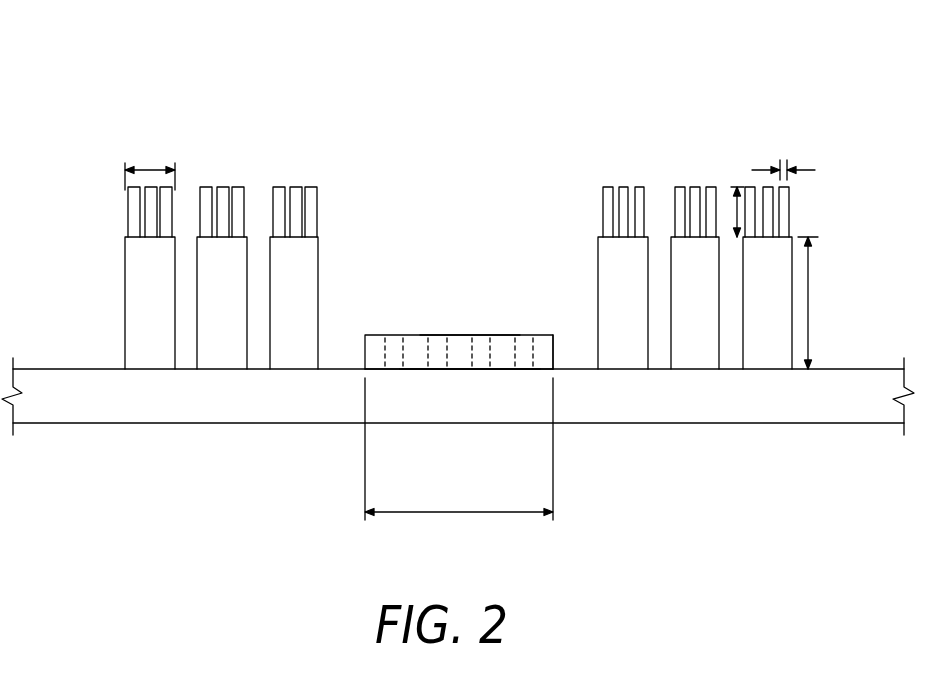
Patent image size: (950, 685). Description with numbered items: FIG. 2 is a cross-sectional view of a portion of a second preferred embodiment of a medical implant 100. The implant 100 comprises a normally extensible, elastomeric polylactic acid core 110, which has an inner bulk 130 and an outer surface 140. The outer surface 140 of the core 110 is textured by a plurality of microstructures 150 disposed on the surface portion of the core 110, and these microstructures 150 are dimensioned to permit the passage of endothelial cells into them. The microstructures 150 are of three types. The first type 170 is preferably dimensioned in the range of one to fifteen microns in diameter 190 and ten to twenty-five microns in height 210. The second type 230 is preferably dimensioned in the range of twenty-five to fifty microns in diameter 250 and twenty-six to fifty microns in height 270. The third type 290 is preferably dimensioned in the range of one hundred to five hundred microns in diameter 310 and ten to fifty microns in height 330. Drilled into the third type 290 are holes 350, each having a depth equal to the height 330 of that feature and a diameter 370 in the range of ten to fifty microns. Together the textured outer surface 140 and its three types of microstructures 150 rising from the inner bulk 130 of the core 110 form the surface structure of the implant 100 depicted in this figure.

The implant 100 is at (670, 70).
The polylactic acid core 110 is at (112, 423).
The inner bulk 130 is at (252, 405).
The outer surface 140 is at (490, 247).
The microstructures 150 is at (368, 335).
The first type microstructure 170 is at (790, 213).
The diameter of first type 190 is at (810, 170).
The height of first type 210 is at (737, 215).
The second type microstructure 230 is at (125, 305).
The diameter of second type 250 is at (148, 168).
The height of second type 270 is at (808, 303).
The third type microstructure 290 is at (438, 325).
The diameter of third type 310 is at (458, 512).
The height of third type 330 is at (565, 350).
The holes 350 is at (480, 343).
The diameter of holes 370 is at (523, 370).